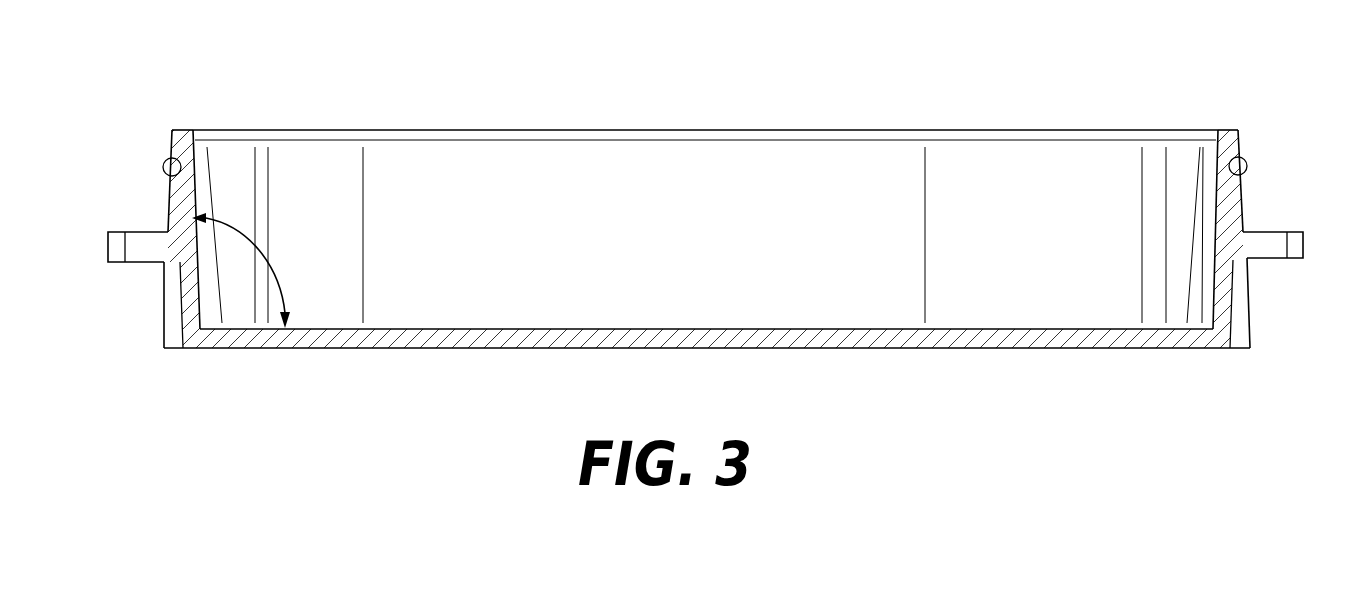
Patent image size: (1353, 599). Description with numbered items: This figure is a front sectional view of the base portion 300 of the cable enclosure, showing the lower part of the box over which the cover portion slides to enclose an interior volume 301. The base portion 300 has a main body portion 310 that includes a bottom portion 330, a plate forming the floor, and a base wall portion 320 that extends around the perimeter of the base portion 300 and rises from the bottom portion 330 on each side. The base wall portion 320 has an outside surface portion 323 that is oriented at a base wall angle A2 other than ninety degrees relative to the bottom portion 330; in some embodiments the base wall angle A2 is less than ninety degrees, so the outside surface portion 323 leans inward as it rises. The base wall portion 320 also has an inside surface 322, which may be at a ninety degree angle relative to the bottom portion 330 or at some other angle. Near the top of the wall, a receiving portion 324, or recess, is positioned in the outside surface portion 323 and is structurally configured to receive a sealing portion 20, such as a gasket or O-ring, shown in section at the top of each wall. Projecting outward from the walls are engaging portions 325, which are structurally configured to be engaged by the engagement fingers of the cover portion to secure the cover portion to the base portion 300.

The base portion 300 is at (701, 235).
The interior volume 301 is at (862, 178).
The main body portion 310 is at (1187, 338).
The bottom portion 330 is at (903, 343).
The base wall portion 320 is at (172, 207).
The inside surface 322 is at (1238, 257).
The outside surface portion 323 is at (169, 187).
The receiving portion 324 is at (186, 141).
The engaging portion 325 is at (117, 254).
The sealing portion 20 is at (166, 160).
The base wall angle A2 is at (247, 240).